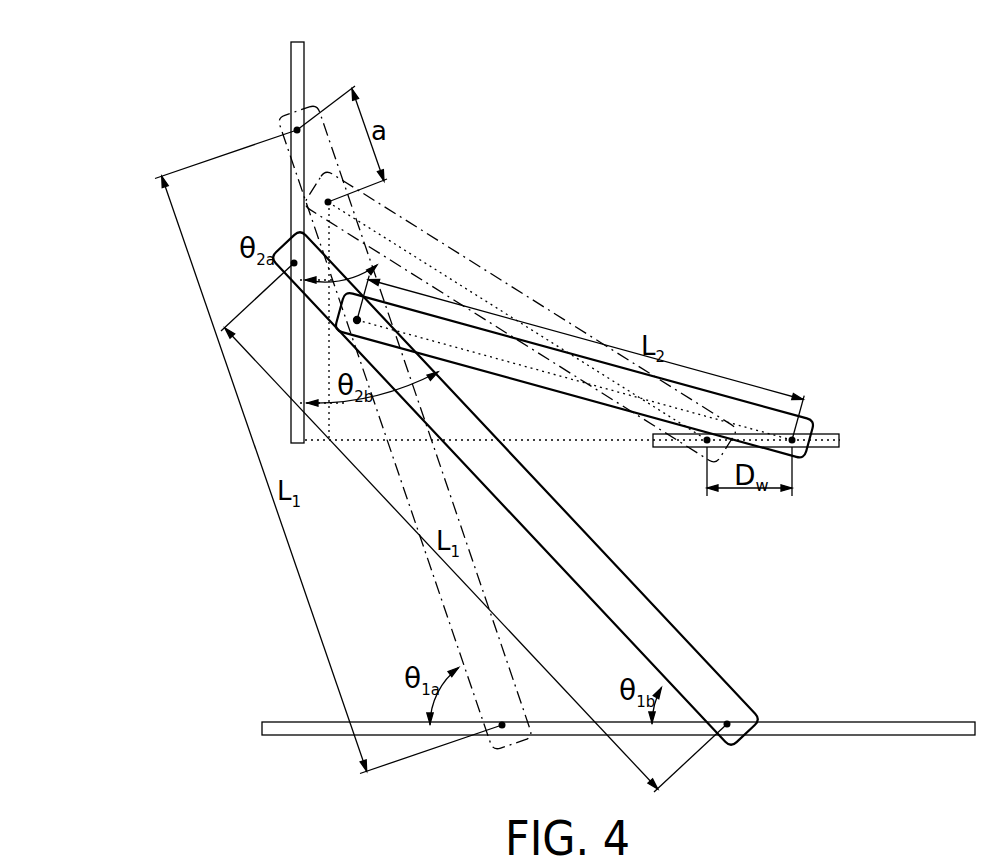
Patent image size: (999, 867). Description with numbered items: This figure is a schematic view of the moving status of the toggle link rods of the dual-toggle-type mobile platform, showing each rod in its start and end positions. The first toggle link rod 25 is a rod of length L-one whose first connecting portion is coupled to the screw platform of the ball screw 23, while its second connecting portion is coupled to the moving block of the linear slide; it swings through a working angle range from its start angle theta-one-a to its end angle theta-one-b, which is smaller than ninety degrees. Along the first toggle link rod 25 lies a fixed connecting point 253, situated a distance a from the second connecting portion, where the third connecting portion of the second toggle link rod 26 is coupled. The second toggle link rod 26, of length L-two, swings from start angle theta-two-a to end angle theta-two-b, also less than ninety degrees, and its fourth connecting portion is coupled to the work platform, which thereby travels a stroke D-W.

The ball screw 23 is at (833, 722).
The first toggle link rod 25 is at (722, 686).
The fixed connecting point 253 is at (360, 320).
The second toggle link rod 26 is at (806, 426).